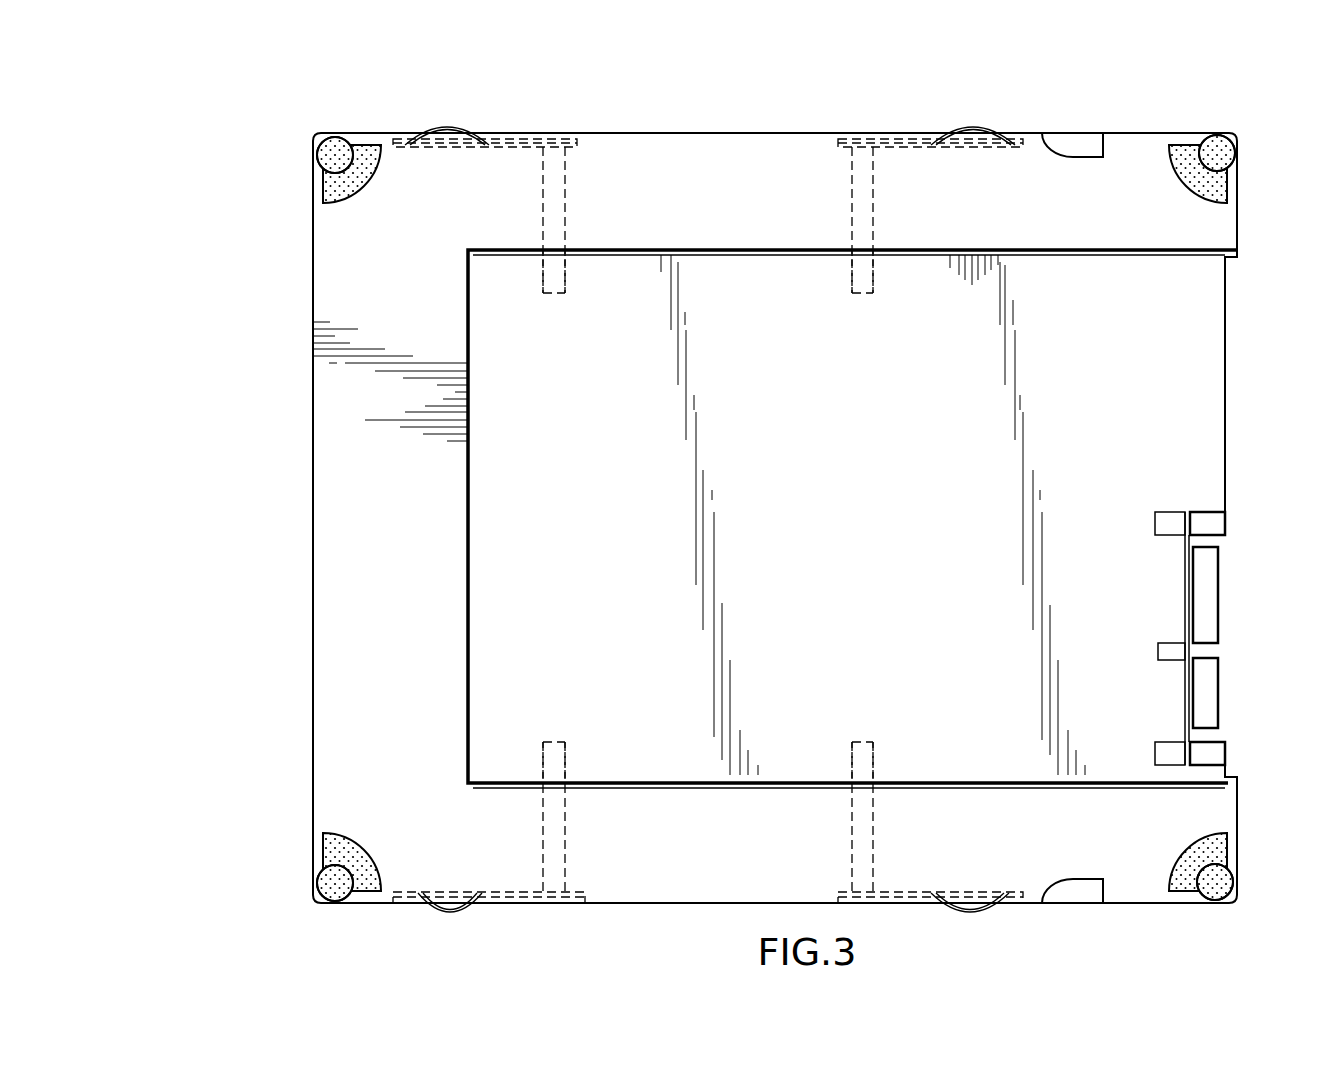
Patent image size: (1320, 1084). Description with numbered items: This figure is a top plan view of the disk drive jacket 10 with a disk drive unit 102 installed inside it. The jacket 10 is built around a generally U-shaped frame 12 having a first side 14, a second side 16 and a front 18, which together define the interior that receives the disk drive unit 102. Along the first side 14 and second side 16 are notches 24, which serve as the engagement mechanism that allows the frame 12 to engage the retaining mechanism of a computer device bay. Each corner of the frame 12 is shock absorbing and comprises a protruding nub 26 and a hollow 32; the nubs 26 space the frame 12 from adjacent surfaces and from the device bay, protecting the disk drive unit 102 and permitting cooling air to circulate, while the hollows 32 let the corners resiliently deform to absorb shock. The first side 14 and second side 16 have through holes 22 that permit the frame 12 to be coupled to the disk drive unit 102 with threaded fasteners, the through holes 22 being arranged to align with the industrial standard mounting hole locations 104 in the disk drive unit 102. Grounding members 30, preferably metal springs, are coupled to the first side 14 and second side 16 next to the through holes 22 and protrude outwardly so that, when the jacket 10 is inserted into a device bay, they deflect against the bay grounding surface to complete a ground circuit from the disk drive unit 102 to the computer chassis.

The disk drive jacket 10 is at (238, 324).
The frame 12 is at (367, 600).
The first side 14 is at (742, 147).
The second side 16 is at (672, 867).
The front 18 is at (347, 462).
The through holes 22 is at (556, 188).
The notches 24 is at (1083, 143).
The protruding nub 26 is at (332, 150).
The grounding members 30 is at (462, 127).
The hollow 32 is at (328, 188).
The disk drive unit 102 is at (778, 564).
The mounting hole locations 104 is at (549, 296).